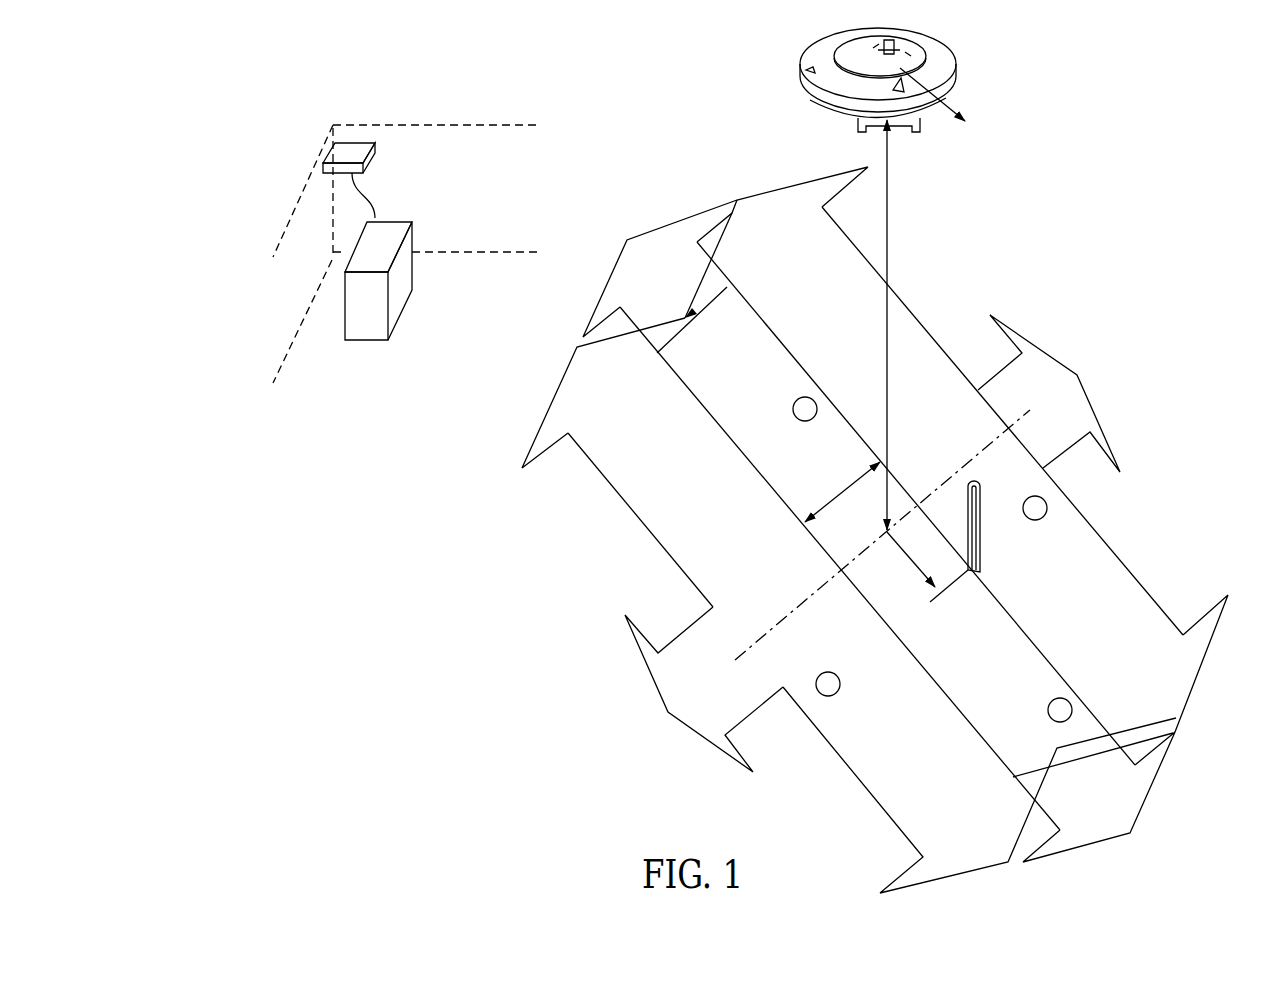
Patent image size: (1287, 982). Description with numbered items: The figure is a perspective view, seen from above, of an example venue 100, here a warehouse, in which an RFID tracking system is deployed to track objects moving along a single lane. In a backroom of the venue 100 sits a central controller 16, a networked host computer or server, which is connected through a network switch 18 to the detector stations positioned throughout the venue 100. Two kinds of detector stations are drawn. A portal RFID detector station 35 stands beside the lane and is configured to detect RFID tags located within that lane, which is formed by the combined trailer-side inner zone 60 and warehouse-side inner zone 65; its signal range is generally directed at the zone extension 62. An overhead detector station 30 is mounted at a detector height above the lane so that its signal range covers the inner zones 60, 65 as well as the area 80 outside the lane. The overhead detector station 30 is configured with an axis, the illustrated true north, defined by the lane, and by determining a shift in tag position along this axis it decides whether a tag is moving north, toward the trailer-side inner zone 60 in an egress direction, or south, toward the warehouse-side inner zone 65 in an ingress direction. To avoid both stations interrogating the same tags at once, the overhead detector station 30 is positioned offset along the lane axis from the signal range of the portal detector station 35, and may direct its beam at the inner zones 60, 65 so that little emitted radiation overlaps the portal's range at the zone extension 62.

The venue 100 is at (625, 86).
The central controller 16 is at (412, 233).
The network switch 18 is at (364, 166).
The overhead detector station 30 is at (957, 74).
The portal RFID detector station 35 is at (981, 528).
The trailer-side inner zone 60 is at (1060, 684).
The zone extension 62 is at (799, 630).
The warehouse-side inner zone 65 is at (760, 318).
The area outside the lane 80 is at (923, 335).